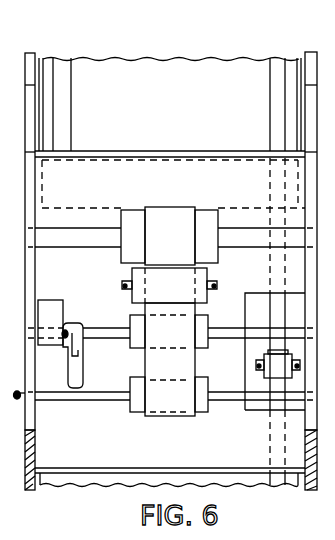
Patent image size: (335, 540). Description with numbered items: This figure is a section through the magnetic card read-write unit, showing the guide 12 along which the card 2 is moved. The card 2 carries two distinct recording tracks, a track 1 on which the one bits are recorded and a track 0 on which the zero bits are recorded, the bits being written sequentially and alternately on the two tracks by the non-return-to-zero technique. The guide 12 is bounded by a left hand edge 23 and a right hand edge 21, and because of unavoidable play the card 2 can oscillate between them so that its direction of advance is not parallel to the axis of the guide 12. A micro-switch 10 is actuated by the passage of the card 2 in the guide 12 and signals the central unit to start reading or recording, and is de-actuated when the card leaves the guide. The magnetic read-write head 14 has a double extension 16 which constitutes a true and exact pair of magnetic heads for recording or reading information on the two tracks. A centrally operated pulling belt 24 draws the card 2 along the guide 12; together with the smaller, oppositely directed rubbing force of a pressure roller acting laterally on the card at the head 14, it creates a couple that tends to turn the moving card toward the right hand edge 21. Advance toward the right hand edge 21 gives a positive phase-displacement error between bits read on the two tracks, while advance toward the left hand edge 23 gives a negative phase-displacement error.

The guide 12 is at (78, 52).
The card 2 is at (137, 62).
The track 0 is at (55, 105).
The track 1 is at (70, 130).
The left hand edge 23 is at (30, 192).
The pulling belt 24 is at (160, 212).
The right hand edge 21 is at (305, 188).
The micro-switch 10 is at (50, 308).
The magnetic read-write head 14 is at (260, 413).
The double extension 16 is at (295, 405).